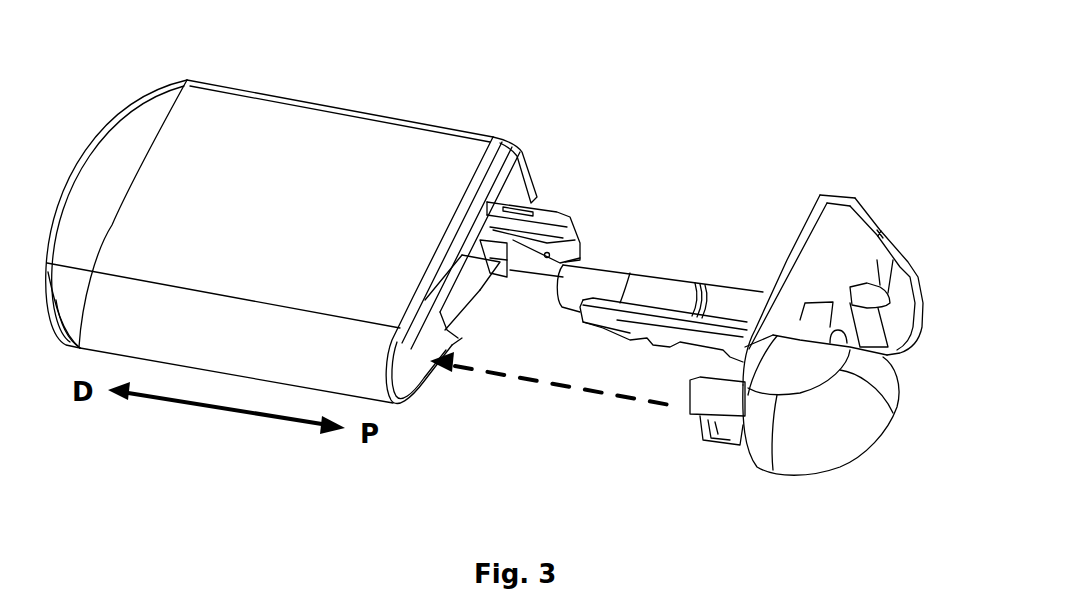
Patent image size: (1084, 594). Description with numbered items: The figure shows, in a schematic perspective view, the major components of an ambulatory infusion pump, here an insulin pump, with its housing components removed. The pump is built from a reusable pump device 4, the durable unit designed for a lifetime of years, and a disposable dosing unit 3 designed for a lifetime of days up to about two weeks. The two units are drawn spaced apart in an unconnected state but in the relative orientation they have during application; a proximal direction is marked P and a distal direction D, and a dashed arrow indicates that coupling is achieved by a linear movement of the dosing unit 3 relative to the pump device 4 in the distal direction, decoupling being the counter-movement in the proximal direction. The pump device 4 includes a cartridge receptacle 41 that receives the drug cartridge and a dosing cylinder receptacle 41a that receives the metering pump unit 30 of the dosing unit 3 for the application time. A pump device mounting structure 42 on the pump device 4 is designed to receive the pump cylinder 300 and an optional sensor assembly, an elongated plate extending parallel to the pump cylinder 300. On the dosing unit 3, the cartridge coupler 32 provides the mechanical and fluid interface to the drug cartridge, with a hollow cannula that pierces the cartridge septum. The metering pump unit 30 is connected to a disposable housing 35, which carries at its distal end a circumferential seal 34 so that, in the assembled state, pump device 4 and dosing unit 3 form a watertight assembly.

The dosing unit 3 is at (748, 245).
The pump device 4 is at (330, 254).
The metering pump unit 30 is at (682, 248).
The pump cylinder 300 is at (680, 290).
The cartridge coupler 32 is at (712, 428).
The circumferential seal 34 is at (810, 197).
The disposable housing 35 is at (833, 220).
The cartridge receptacle 41 is at (397, 368).
The dosing cylinder receptacle 41a is at (465, 297).
The pump device mounting structure 42 is at (513, 135).